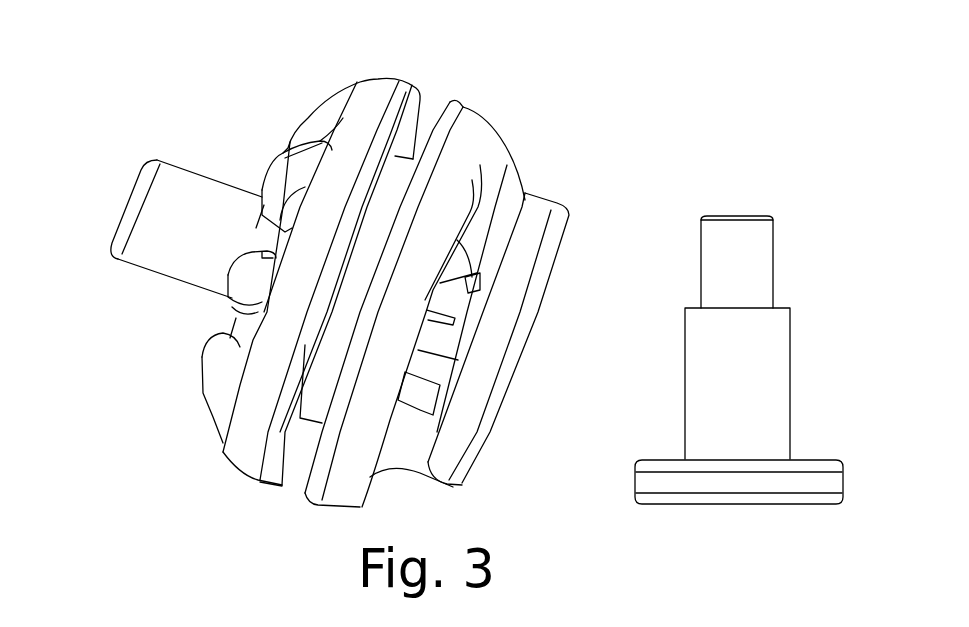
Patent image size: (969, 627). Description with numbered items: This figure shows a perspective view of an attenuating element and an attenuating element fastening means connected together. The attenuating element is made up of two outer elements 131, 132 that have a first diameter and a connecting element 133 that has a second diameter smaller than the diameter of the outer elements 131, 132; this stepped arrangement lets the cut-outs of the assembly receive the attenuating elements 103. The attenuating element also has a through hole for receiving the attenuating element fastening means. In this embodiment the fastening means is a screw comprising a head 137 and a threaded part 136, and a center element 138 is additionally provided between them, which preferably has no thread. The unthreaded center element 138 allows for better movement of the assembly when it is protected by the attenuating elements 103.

The attenuating elements 103 is at (428, 112).
The outer element 131 is at (292, 127).
The outer element 132 is at (393, 490).
The connecting element 133 is at (402, 173).
The threaded part 136 is at (163, 222).
The head 137 is at (662, 459).
The center element 138 is at (792, 307).